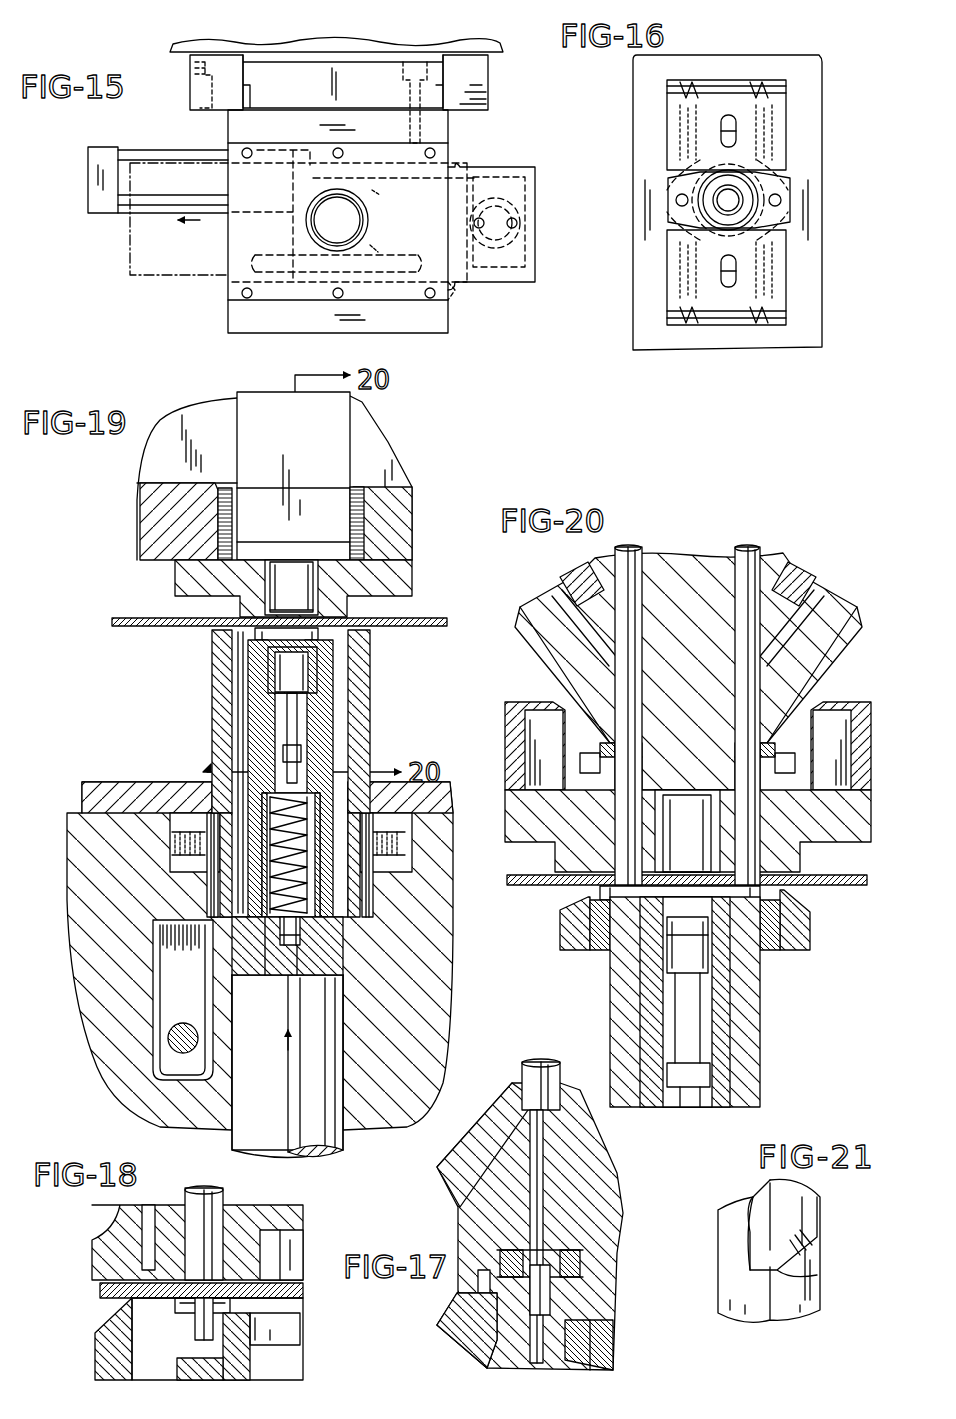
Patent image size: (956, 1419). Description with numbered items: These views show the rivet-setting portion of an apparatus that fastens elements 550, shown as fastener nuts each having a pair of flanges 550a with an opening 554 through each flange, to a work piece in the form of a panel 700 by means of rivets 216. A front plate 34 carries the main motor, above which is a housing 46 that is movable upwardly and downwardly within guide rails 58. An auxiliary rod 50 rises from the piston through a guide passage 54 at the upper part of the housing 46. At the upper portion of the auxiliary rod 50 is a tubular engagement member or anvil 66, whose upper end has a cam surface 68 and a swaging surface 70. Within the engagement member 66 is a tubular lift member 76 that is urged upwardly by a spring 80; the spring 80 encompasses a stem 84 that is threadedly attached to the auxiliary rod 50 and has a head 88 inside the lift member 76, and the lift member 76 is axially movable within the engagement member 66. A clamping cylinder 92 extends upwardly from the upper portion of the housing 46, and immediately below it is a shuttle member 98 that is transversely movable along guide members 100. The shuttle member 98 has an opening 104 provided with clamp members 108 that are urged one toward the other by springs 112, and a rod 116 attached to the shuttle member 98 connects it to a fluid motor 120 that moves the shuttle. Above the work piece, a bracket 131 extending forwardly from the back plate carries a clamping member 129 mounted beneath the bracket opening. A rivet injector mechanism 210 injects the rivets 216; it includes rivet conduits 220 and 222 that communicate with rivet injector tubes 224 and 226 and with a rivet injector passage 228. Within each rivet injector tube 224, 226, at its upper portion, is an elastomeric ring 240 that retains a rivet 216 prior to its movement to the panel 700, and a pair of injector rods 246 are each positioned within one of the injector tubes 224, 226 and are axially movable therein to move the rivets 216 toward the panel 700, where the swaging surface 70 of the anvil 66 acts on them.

In FIG. 15, the front plate 34 is at (265, 42).
In FIG. 15, the housing 46 is at (228, 322).
In FIG. 19, the auxiliary rod 50 is at (270, 1068).
In FIG. 19, the guide passage 54 is at (232, 1098).
In FIG. 15, the guide rails 58 is at (190, 76).
In FIG. 19, the tubular engagement member 66 is at (333, 697).
In FIG. 20, the tubular engagement member 66 is at (755, 1027).
In FIG. 21, the tubular engagement member 66 is at (728, 1282).
In FIG. 19, the cam surface 68 is at (268, 667).
In FIG. 21, the cam surface 68 is at (815, 1252).
In FIG. 20, the swaging surface 70 is at (598, 945).
In FIG. 18, the swaging surface 70 is at (185, 1368).
In FIG. 21, the swaging surface 70 is at (735, 1215).
In FIG. 19, the tubular lift member 76 is at (318, 724).
In FIG. 20, the tubular lift member 76 is at (645, 1025).
In FIG. 18, the tubular lift member 76 is at (250, 1366).
In FIG. 19, the spring 80 is at (300, 778).
In FIG. 19, the stem 84 is at (283, 960).
In FIG. 20, the stem 84 is at (688, 1107).
In FIG. 19, the head 88 is at (282, 755).
In FIG. 20, the head 88 is at (712, 1078).
In FIG. 15, the clamping cylinder 92 is at (308, 212).
In FIG. 19, the clamping cylinder 92 is at (372, 670).
In FIG. 20, the clamping cylinder 92 is at (560, 925).
In FIG. 18, the clamping cylinder 92 is at (95, 1360).
In FIG. 15, the shuttle member 98 is at (148, 280).
In FIG. 16, the shuttle member 98 is at (628, 330).
In FIG. 19, the shuttle member 98 is at (138, 897).
In FIG. 15, the guide members 100 is at (456, 168).
In FIG. 19, the guide members 100 is at (170, 852).
In FIG. 16, the opening 104 is at (678, 188).
In FIG. 15, the clamp members 108 is at (525, 234).
In FIG. 16, the clamp members 108 is at (670, 130).
In FIG. 19, the clamp members 108 is at (180, 828).
In FIG. 16, the springs 112 is at (765, 80).
In FIG. 19, the springs 112 is at (188, 835).
In FIG. 15, the rod 116 is at (375, 200).
In FIG. 19, the rod 116 is at (195, 1025).
In FIG. 15, the fluid motor 120 is at (165, 150).
In FIG. 19, the clamping member 129 is at (405, 575).
In FIG. 20, the clamping member 129 is at (838, 790).
In FIG. 17, the clamping member 129 is at (452, 1330).
In FIG. 18, the clamping member 129 is at (100, 1216).
In FIG. 19, the bracket 131 is at (405, 532).
In FIG. 20, the bracket 131 is at (865, 715).
In FIG. 19, the rivet injector mechanism 210 is at (305, 447).
In FIG. 20, the rivet injector mechanism 210 is at (685, 565).
In FIG. 17, the rivet injector mechanism 210 is at (595, 1192).
In FIG. 19, the rivets 216 is at (250, 636).
In FIG. 20, the rivets 216 is at (600, 892).
In FIG. 17, the rivets 216 is at (555, 1290).
In FIG. 18, the rivets 216 is at (195, 1330).
In FIG. 20, the rivet conduit 220 is at (562, 590).
In FIG. 17, the rivet conduit 220 is at (483, 1118).
In FIG. 20, the rivet conduit 222 is at (840, 590).
In FIG. 19, the rivet injector tube 224 is at (292, 572).
In FIG. 20, the rivet injector tube 224 is at (600, 835).
In FIG. 17, the rivet injector tube 224 is at (575, 1352).
In FIG. 18, the rivet injector tube 224 is at (158, 1240).
In FIG. 20, the rivet injector tube 226 is at (775, 840).
In FIG. 17, the rivet injector passage 228 is at (553, 1155).
In FIG. 20, the elastomeric ring 240 is at (740, 755).
In FIG. 17, the elastomeric ring 240 is at (585, 1262).
In FIG. 20, the injector rods 246 is at (750, 548).
In FIG. 17, the injector rods 246 is at (540, 1065).
In FIG. 18, the injector rods 246 is at (203, 1195).
In FIG. 16, the elements 550 is at (760, 213).
In FIG. 19, the elements 550 is at (283, 675).
In FIG. 20, the elements 550 is at (668, 965).
In FIG. 18, the elements 550 is at (290, 1332).
In FIG. 16, the flanges 550a is at (690, 185).
In FIG. 16, the opening 554 is at (675, 200).
In FIG. 18, the opening 554 is at (195, 1312).
In FIG. 19, the panel 700 is at (122, 618).
In FIG. 20, the panel 700 is at (867, 876).
In FIG. 18, the panel 700 is at (100, 1288).